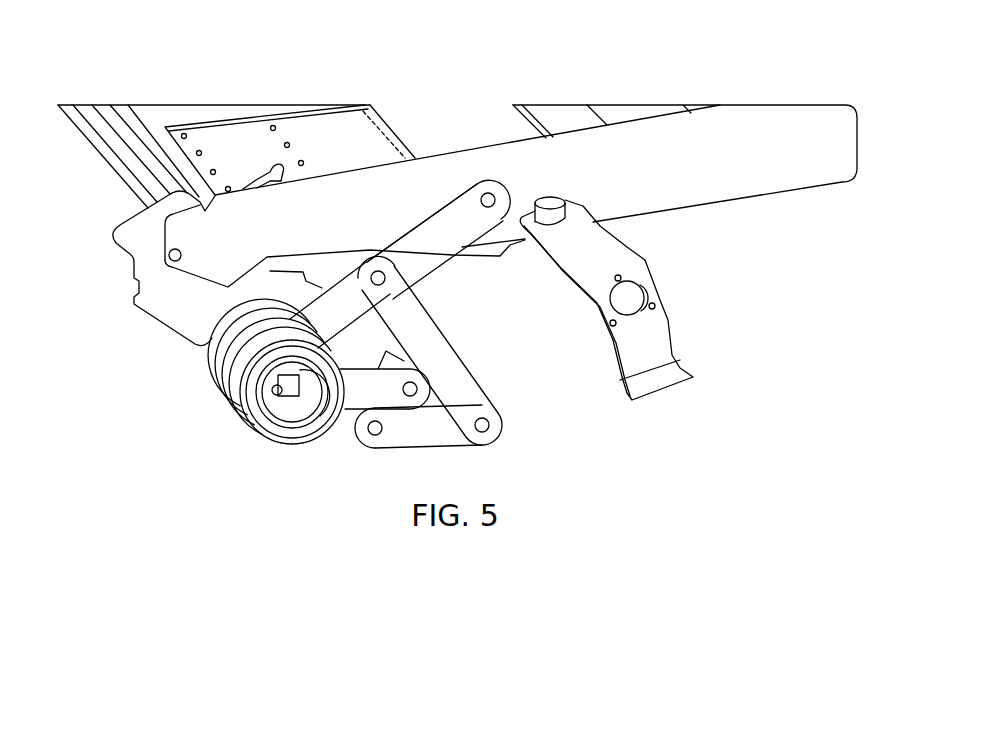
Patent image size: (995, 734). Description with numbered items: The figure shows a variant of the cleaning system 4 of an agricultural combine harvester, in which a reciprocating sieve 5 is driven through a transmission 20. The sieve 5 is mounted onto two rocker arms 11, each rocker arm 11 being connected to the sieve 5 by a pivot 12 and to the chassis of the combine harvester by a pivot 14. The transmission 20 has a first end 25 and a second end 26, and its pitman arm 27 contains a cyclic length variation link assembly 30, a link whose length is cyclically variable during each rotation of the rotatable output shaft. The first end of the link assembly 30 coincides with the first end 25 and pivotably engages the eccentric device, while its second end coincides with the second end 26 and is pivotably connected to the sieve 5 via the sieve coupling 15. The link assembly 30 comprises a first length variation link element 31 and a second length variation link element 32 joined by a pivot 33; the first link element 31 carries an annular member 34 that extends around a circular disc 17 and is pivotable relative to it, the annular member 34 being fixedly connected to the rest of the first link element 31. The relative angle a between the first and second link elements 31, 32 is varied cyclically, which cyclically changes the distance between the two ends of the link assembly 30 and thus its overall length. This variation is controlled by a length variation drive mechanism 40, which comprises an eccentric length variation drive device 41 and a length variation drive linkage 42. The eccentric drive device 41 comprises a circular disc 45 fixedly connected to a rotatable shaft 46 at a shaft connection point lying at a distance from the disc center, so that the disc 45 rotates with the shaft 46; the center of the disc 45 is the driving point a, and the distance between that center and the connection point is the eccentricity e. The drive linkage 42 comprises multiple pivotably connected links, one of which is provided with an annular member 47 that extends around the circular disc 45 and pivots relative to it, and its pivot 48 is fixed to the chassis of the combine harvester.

The cleaning system 4 is at (461, 386).
The sieve 5 is at (783, 184).
The rocker arms 11 is at (626, 271).
The pivot 12 is at (551, 200).
The pivot 14 is at (628, 298).
The sieve coupling 15 is at (478, 235).
The circular disc 17 is at (227, 370).
The transmission 20 is at (245, 458).
The first end of the transmission 25 is at (205, 342).
The second end of the transmission 26 is at (497, 190).
The pitman arm 27 is at (413, 213).
The cyclic length variation link assembly 30 is at (455, 156).
The first length variation link element 31 is at (328, 307).
The second length variation link element 32 is at (455, 175).
The pivot 33 is at (408, 294).
The annular member 34 is at (222, 390).
The length variation drive mechanism 40 is at (490, 405).
The eccentric length variation drive device 41 is at (269, 446).
The length variation drive linkage 42 is at (469, 413).
The circular disc 45 is at (313, 407).
The rotatable shaft 46 is at (273, 393).
The annular member 47 is at (262, 427).
The pivot 48 is at (374, 432).
The driving point / relative angle a is at (297, 397).
The eccentricity e is at (338, 400).